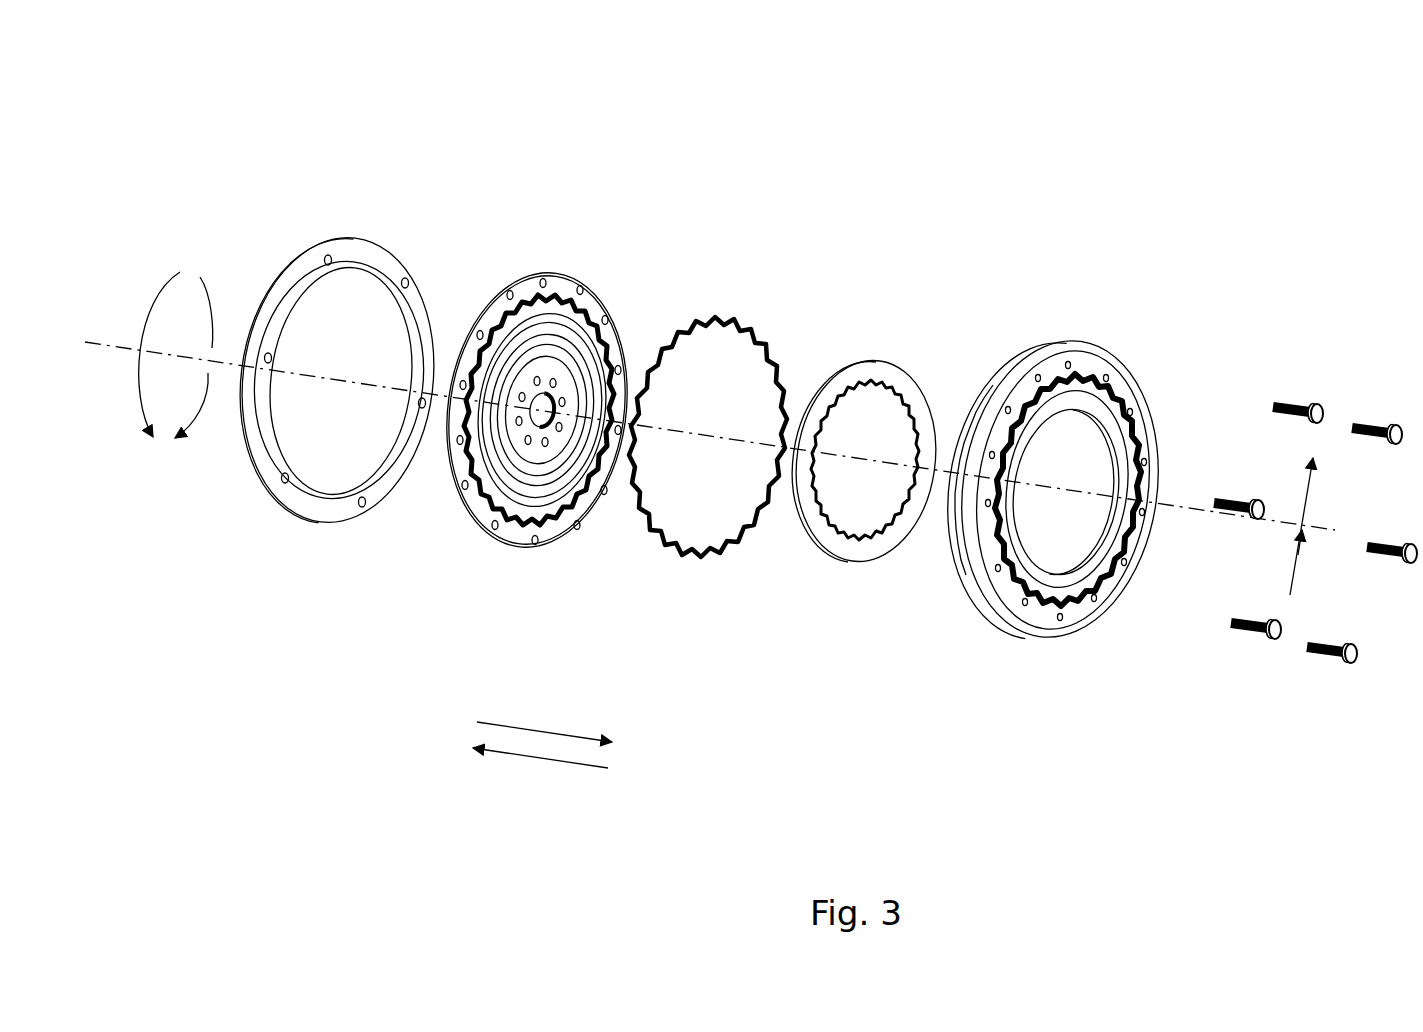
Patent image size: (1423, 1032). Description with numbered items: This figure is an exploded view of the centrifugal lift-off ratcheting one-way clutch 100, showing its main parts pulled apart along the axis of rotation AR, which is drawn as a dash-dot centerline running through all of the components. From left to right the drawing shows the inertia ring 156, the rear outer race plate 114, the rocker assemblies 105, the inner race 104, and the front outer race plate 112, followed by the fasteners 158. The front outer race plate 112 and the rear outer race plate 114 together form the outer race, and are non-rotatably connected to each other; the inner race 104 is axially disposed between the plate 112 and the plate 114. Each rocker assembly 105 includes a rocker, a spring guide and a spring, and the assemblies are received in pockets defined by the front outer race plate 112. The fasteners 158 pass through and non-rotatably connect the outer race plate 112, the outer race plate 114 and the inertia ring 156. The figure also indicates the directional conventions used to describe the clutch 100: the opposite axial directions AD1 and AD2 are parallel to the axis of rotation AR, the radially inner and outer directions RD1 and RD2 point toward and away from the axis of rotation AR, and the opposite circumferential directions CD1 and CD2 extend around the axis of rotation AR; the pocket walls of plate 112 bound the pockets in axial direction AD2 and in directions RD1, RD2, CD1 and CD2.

The centrifugal lift-off ratcheting one-way clutch 100 is at (1166, 108).
The inner race 104 is at (873, 360).
The rocker assemblies 105 is at (745, 332).
The front outer race plate 112 is at (1058, 343).
The rear outer race plate 114 is at (545, 272).
The inertia ring 156 is at (362, 238).
The fasteners 158 is at (1290, 405).
The axis of rotation AR is at (1153, 504).
The axial direction AD1 is at (541, 757).
The axial direction AD2 is at (543, 733).
The radially inner direction RD1 is at (1300, 557).
The radially outer direction RD2 is at (1306, 504).
The circumferential direction CD1 is at (190, 427).
The circumferential direction CD2 is at (153, 307).